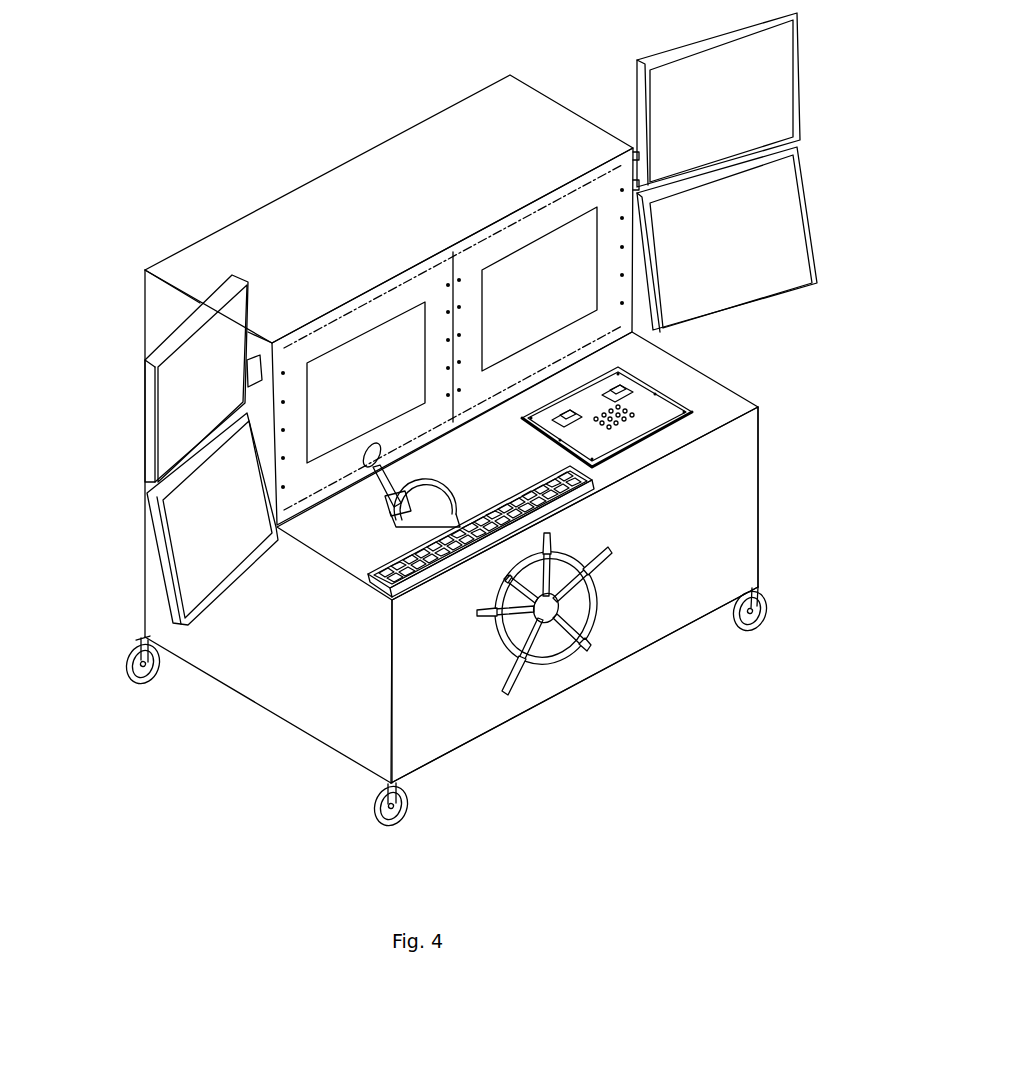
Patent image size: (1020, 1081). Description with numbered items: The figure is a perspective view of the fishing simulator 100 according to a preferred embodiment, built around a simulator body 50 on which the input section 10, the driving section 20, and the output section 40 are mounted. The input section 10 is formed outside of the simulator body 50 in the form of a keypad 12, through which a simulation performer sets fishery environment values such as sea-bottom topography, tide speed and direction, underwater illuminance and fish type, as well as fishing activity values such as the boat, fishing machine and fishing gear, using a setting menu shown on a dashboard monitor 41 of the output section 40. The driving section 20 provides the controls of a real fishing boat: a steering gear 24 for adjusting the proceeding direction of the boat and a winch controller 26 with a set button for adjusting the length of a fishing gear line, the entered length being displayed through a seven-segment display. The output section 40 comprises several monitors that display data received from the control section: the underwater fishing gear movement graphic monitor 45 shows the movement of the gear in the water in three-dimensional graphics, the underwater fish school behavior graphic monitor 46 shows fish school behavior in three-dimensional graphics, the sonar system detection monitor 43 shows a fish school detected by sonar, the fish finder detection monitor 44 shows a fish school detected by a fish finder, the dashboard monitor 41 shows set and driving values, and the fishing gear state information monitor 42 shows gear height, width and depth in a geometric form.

The input section 10 is at (298, 706).
The keypad 12 is at (380, 592).
The driving section 20 is at (640, 503).
The steering gear 24 is at (530, 650).
The winch controller 26 is at (660, 406).
The output section 40 is at (553, 205).
The dashboard monitor 41 is at (370, 348).
The fishing gear state information monitor 42 is at (183, 545).
The sonar system detection monitor 43 is at (782, 235).
The fish finder detection monitor 44 is at (510, 272).
The underwater fishing gear movement graphic monitor 45 is at (775, 87).
The underwater fish school behavior graphic monitor 46 is at (173, 408).
The simulator body 50 is at (740, 480).
The fishing simulator 100 is at (438, 482).